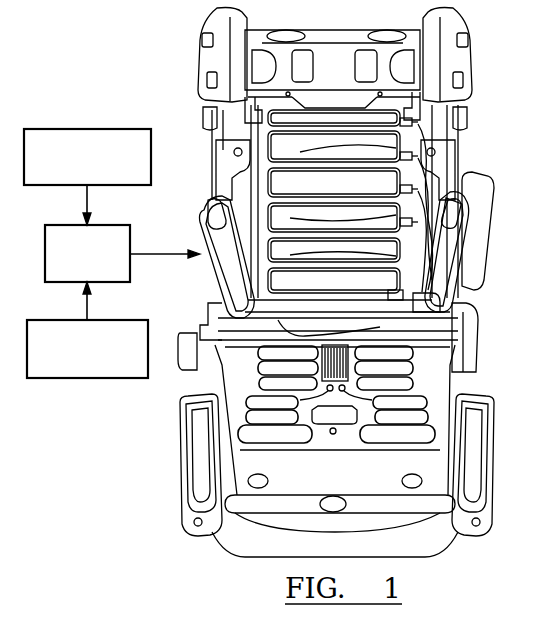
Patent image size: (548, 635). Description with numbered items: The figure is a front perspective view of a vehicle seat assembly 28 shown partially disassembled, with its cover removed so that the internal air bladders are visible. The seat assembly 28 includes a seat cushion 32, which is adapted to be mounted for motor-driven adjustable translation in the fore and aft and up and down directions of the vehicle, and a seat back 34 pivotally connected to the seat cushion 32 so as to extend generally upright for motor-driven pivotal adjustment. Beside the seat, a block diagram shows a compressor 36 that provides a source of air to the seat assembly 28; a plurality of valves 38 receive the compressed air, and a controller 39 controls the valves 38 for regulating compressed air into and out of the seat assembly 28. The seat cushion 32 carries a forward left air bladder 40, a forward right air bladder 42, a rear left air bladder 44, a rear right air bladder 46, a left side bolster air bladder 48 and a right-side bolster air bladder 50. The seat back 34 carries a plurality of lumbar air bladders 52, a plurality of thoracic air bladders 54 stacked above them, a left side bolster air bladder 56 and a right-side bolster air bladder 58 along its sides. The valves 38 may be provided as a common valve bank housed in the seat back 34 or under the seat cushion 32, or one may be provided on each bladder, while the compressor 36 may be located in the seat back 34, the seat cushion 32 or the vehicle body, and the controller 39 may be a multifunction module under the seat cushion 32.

The vehicle seat assembly 28 is at (90, 480).
The seat cushion 32 is at (160, 500).
The seat back 34 is at (458, 150).
The compressor 36 is at (87, 157).
The valves 38 is at (87, 253).
The controller 39 is at (87, 349).
The forward left air bladder 40 is at (390, 432).
The forward right air bladder 42 is at (280, 432).
The rear left air bladder 44 is at (412, 352).
The rear right air bladder 46 is at (258, 352).
The left side bolster air bladder 48 is at (480, 432).
The right-side bolster air bladder 50 is at (192, 440).
The lumbar air bladders 52 is at (377, 275).
The thoracic air bladders 54 is at (303, 157).
The left side bolster air bladder 56 is at (438, 253).
The right-side bolster air bladder 58 is at (232, 238).